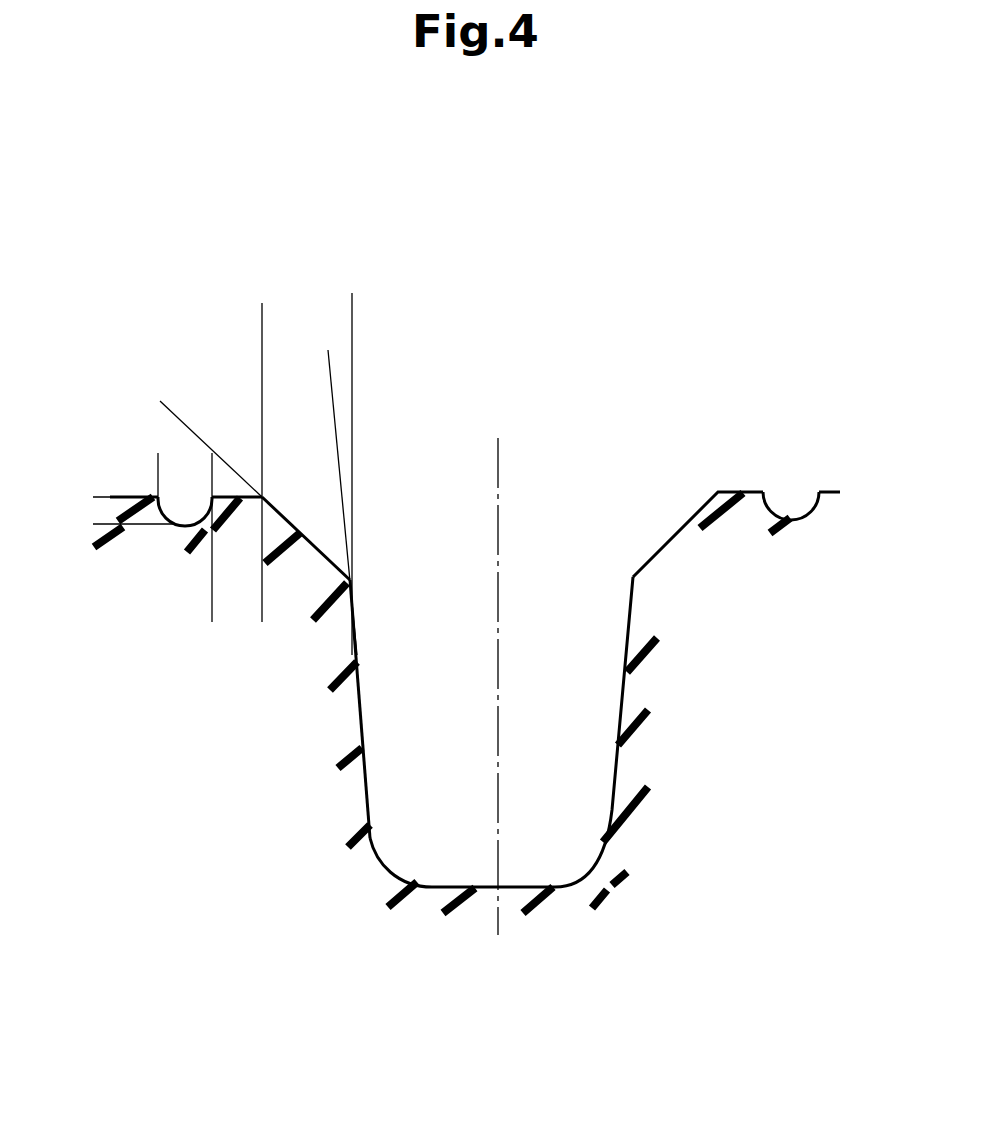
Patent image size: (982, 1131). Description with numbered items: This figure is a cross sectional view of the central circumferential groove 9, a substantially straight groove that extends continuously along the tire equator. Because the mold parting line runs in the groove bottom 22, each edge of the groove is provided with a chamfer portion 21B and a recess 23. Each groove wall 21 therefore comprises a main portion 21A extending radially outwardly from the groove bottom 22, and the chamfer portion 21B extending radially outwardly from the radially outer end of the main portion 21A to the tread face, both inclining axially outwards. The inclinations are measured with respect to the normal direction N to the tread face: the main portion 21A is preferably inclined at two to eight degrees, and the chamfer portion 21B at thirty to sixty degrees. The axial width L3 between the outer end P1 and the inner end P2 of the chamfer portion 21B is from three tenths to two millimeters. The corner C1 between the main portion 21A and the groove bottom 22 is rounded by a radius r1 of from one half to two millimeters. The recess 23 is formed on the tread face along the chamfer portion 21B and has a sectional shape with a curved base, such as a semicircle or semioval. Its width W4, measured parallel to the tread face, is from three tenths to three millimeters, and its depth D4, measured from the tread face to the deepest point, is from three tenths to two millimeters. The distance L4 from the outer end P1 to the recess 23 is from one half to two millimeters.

The central circumferential groove 9 is at (563, 455).
The groove wall 21 is at (474, 482).
The main portion 21A is at (353, 618).
The chamfer portion 21B is at (295, 528).
The groove bottom 22 is at (518, 887).
The recess 23 is at (190, 522).
The normal reference line N is at (390, 383).
The outer end of the chamfer portion P1 is at (266, 484).
The inner end of the chamfer portion P2 is at (355, 578).
The axial width of the chamfer portion L3 is at (352, 303).
The distance from the outer end to the recess L4 is at (212, 618).
The width of the recess W4 is at (235, 453).
The depth of the recess D4 is at (93, 497).
The radius of the corner r1 is at (395, 862).
The corner between the main portion and groove bottom C1 is at (392, 877).